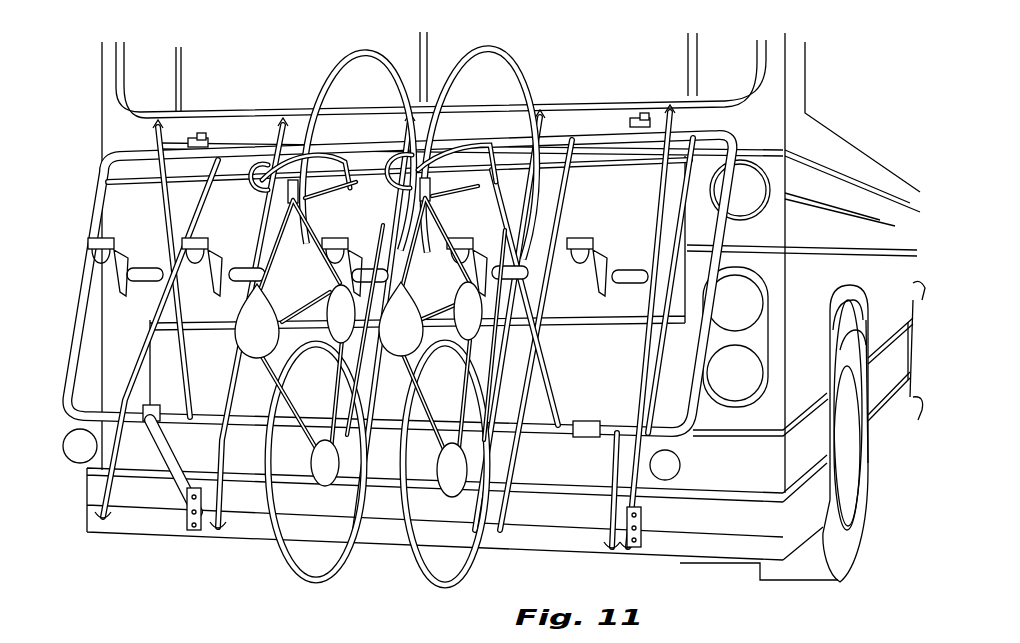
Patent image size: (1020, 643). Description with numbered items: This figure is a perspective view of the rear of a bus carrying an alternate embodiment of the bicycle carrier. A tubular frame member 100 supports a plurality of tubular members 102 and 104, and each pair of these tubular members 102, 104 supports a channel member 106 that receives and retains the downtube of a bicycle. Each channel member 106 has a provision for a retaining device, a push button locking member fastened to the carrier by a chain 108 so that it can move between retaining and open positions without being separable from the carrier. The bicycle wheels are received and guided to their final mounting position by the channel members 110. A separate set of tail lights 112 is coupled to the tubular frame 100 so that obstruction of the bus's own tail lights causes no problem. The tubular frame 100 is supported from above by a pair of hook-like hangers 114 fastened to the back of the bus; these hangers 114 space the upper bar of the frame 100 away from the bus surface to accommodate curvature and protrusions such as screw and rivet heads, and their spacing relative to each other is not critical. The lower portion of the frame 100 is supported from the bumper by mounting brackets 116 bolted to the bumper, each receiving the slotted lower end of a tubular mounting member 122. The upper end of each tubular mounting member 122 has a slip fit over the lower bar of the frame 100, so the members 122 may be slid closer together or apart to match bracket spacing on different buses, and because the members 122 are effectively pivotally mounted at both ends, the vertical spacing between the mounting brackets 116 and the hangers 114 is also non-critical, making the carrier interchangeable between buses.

The tubular frame member 100 is at (604, 133).
The tubular member 102 is at (657, 213).
The tubular member 104 is at (603, 360).
The channel member 106 is at (95, 238).
The chain 108 is at (100, 258).
The channel member 110 is at (225, 536).
The tail lights 112 is at (65, 455).
The hook-like hanger 114 is at (203, 143).
The mounting bracket 116 is at (185, 515).
The tubular mounting member 122 is at (176, 466).